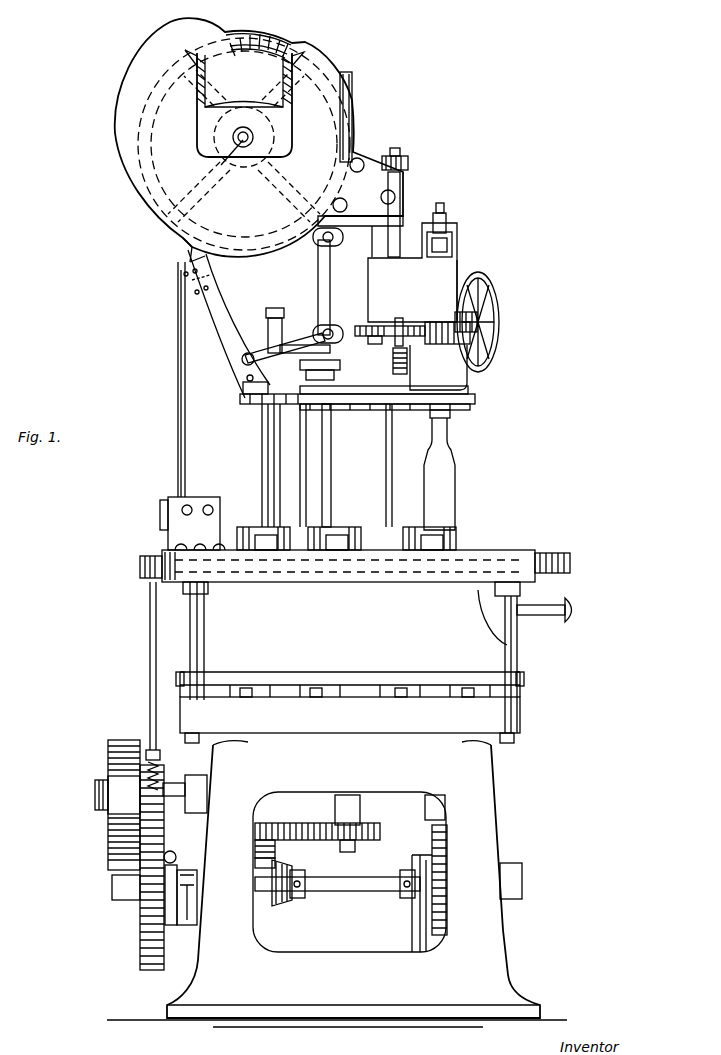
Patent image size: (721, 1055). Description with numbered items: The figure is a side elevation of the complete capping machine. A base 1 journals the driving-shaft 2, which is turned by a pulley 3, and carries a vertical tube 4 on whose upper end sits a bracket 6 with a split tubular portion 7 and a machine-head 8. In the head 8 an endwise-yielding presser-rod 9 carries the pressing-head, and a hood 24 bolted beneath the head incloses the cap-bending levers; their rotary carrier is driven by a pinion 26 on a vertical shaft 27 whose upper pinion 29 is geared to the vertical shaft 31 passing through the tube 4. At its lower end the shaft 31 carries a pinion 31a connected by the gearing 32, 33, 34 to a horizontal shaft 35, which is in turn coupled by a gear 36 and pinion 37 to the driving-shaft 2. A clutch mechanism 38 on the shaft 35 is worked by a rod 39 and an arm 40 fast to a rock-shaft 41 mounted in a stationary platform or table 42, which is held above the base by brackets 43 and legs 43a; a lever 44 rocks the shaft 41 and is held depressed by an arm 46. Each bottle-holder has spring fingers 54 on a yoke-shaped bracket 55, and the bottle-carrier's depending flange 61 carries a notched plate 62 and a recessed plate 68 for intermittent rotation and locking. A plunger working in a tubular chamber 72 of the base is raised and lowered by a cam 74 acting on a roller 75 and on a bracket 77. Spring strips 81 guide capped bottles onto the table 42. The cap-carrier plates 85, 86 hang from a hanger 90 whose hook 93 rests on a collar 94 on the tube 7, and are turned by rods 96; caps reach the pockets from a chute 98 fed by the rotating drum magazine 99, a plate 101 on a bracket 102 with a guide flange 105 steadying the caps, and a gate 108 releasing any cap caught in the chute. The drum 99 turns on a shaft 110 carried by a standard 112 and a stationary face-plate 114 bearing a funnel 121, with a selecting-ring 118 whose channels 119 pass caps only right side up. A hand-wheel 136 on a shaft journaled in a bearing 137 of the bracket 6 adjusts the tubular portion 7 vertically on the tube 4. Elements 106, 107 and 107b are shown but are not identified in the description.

The base 1 is at (337, 884).
The driving-shaft 2 is at (95, 796).
The pulley 3 is at (124, 805).
The vertical tube 4 is at (331, 462).
The bracket 6 is at (412, 272).
The split tubular portion 7 is at (331, 281).
The machine-head 8 is at (458, 277).
The endwise-yielding rod 9 is at (452, 240).
The hood 24 is at (438, 367).
The pinion 26 is at (440, 322).
The vertical shaft 27 is at (400, 226).
The pinion 29 is at (408, 163).
The vertical shaft 31 is at (352, 90).
The pinion 31a is at (372, 840).
The pinion 32 is at (278, 848).
The bevel-pinion 33 is at (278, 862).
The bevel-pinion 34 is at (280, 906).
The horizontal shaft 35 is at (366, 892).
The gear 36 is at (148, 945).
The pinion 37 is at (170, 788).
The clutch mechanism 38 is at (176, 855).
The rod 39 is at (150, 674).
The arm 40 is at (138, 567).
The rock-shaft 41 is at (448, 584).
The stationary platform or table 42 is at (523, 546).
The brackets 43 is at (350, 720).
The legs 43a is at (200, 655).
The lever 44 is at (560, 548).
The arm 46 is at (580, 609).
The spring fingers 54 is at (268, 527).
The yoke-shaped bracket 55 is at (462, 536).
The depending flange 61 is at (350, 645).
The notched plate 62 is at (348, 682).
The plate 68 is at (316, 697).
The tubular chamber 72 is at (425, 805).
The cam 74 is at (425, 905).
The roller 75 is at (447, 852).
The bracket 77 is at (420, 920).
The strips of spring-metal 81 is at (278, 500).
The upper plate 85 is at (468, 390).
The lower plate 86 is at (450, 414).
The hanger 90 is at (412, 364).
The hook 93 is at (343, 340).
The collar 94 is at (392, 328).
The rods 96 is at (300, 452).
The chute 98 is at (233, 330).
The magazine 99 is at (318, 70).
The plate 101 is at (470, 407).
The bracket 102 is at (243, 390).
The guide or flange 105 is at (288, 404).
The bar 106 is at (399, 318).
The link 107 is at (286, 349).
The bolt 107b is at (290, 308).
The gate 108 is at (310, 372).
The shaft 110 is at (233, 137).
The standard 112 is at (178, 394).
The face-plate 114 is at (244, 144).
The selecting-ring 118 is at (243, 150).
The channels 119 is at (236, 40).
The funnel 121 is at (244, 103).
The hand-wheel 136 is at (492, 312).
The bearing 137 is at (478, 310).